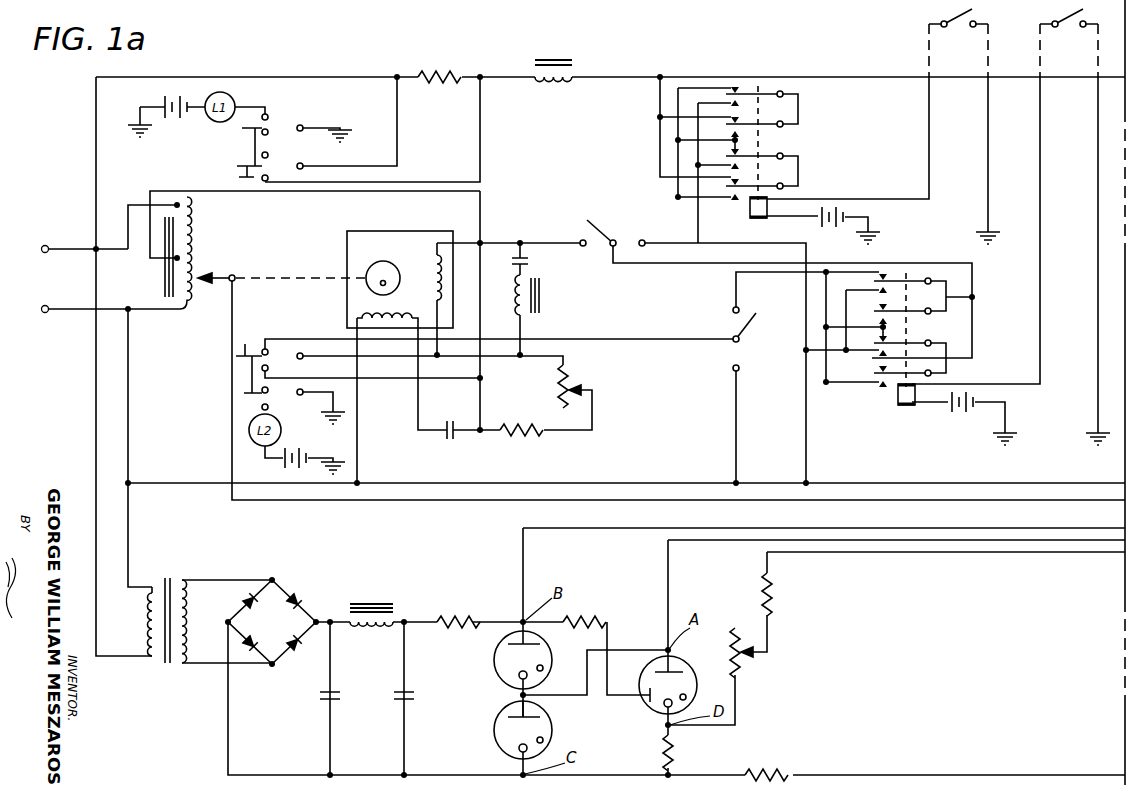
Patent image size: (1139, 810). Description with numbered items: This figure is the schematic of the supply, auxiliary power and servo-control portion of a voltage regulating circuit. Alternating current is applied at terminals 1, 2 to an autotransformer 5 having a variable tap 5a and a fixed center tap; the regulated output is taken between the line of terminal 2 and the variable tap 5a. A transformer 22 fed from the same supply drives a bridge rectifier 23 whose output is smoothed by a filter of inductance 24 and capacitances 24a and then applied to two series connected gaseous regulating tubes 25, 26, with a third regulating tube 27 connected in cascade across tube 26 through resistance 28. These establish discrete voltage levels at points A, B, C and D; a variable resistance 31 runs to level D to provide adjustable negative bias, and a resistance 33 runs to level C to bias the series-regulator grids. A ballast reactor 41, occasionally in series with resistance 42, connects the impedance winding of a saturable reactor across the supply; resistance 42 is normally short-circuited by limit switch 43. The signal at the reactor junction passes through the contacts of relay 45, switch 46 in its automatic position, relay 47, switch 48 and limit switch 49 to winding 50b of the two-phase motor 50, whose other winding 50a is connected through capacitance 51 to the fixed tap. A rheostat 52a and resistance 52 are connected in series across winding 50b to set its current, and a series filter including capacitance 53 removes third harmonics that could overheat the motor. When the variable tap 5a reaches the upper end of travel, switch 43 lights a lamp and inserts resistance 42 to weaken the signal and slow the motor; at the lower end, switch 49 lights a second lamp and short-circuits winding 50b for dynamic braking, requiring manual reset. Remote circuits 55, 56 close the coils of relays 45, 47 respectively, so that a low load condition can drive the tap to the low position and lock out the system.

The terminal 1 is at (33, 250).
The terminal 2 is at (33, 310).
The autotransformer 5 is at (197, 234).
The variable tap 5a is at (209, 278).
The transformer 22 is at (171, 578).
The bridge rectifier 23 is at (280, 590).
The inductance 24 is at (371, 628).
The capacitances 24a is at (343, 700).
The voltage regulating tube 25 is at (500, 665).
The voltage regulating tube 26 is at (498, 730).
The gaseous regulating tube 27 is at (686, 682).
The resistance 28 is at (673, 748).
The variable resistance 31 is at (750, 664).
The resistance 33 is at (782, 772).
The ballast reactor 41 is at (550, 58).
The resistance 42 is at (447, 68).
The limit switch 43 is at (268, 150).
The relay 45 is at (802, 199).
The switch 46 is at (602, 255).
The relay 47 is at (965, 386).
The switch 48 is at (755, 322).
The limit switch 49 is at (252, 350).
The motor 50 is at (383, 241).
The winding 50a is at (365, 317).
The winding 50b is at (448, 281).
The capacitance 51 is at (453, 441).
The resistance 52 is at (525, 436).
The rheostat 52a is at (574, 377).
The capacitance 53 is at (532, 261).
The remotely located means 55 is at (962, 25).
The remotely located means 56 is at (1074, 25).